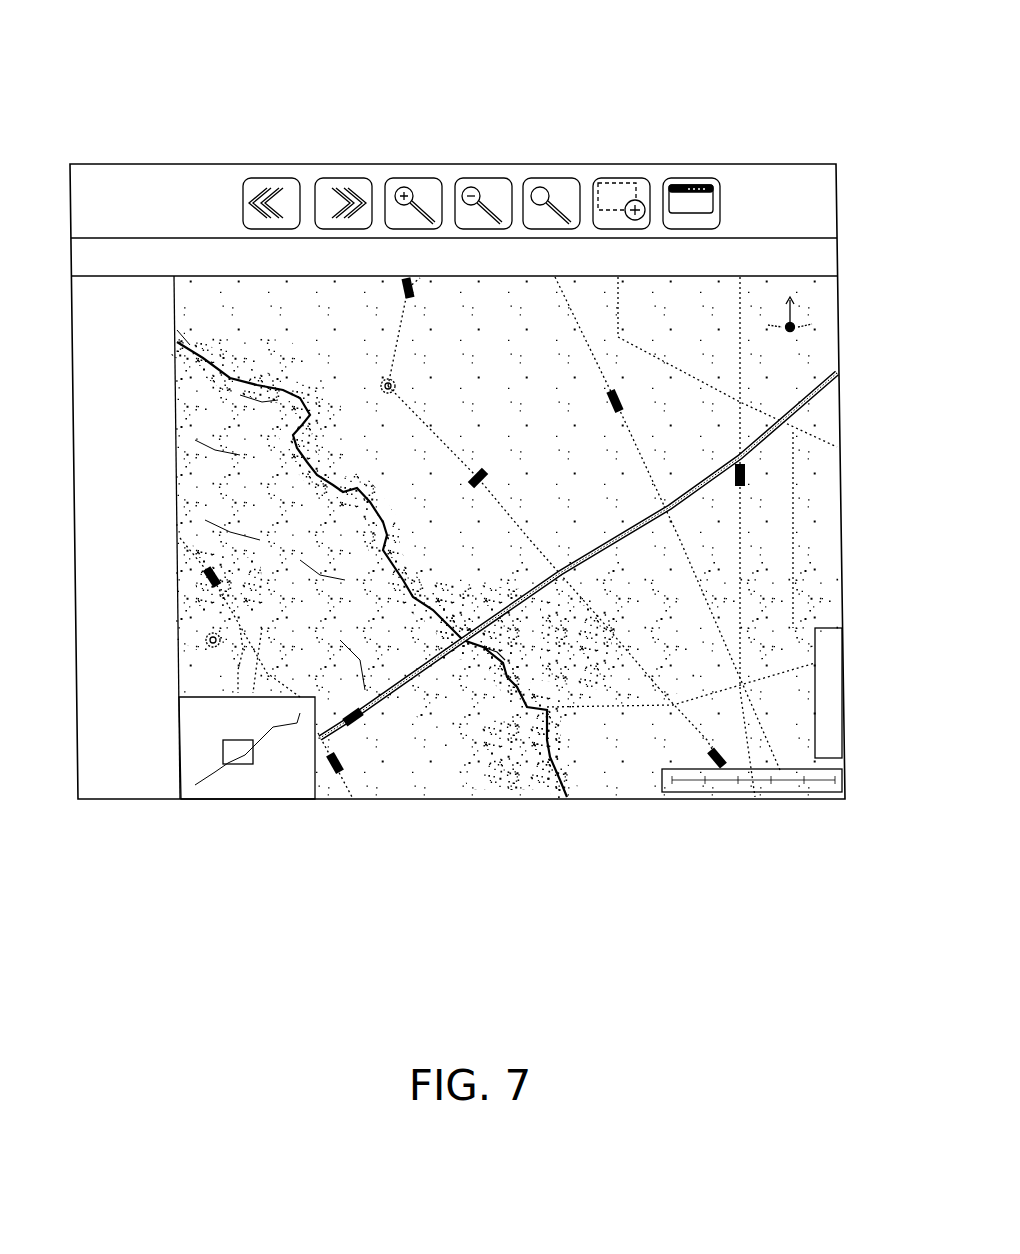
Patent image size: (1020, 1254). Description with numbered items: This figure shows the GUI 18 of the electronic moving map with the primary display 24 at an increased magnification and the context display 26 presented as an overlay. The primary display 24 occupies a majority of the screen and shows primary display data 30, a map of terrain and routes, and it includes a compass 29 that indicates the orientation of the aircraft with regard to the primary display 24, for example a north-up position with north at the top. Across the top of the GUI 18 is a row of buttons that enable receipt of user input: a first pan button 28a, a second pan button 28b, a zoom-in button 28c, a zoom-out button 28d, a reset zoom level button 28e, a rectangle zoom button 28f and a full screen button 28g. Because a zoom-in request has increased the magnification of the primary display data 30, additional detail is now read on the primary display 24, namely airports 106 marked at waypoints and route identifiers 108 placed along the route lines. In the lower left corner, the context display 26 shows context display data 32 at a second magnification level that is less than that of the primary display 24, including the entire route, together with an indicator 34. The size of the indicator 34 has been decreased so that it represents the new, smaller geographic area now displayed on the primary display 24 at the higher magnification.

The GUI 18 is at (215, 82).
The primary display 24 is at (534, 582).
The context display 26 is at (213, 806).
The first pan button 28a is at (263, 184).
The second pan button 28b is at (335, 184).
The zoom-in button 28c is at (412, 184).
The zoom-out button 28d is at (483, 184).
The reset zoom level button 28e is at (553, 184).
The rectangle zoom button 28f is at (625, 184).
The full screen button 28g is at (697, 184).
The compass 29 is at (800, 329).
The primary display data 30 is at (510, 782).
The context display data 32 is at (292, 787).
The indicator 34 is at (230, 753).
The airports 106 is at (381, 390).
The route identifiers 108 is at (619, 397).